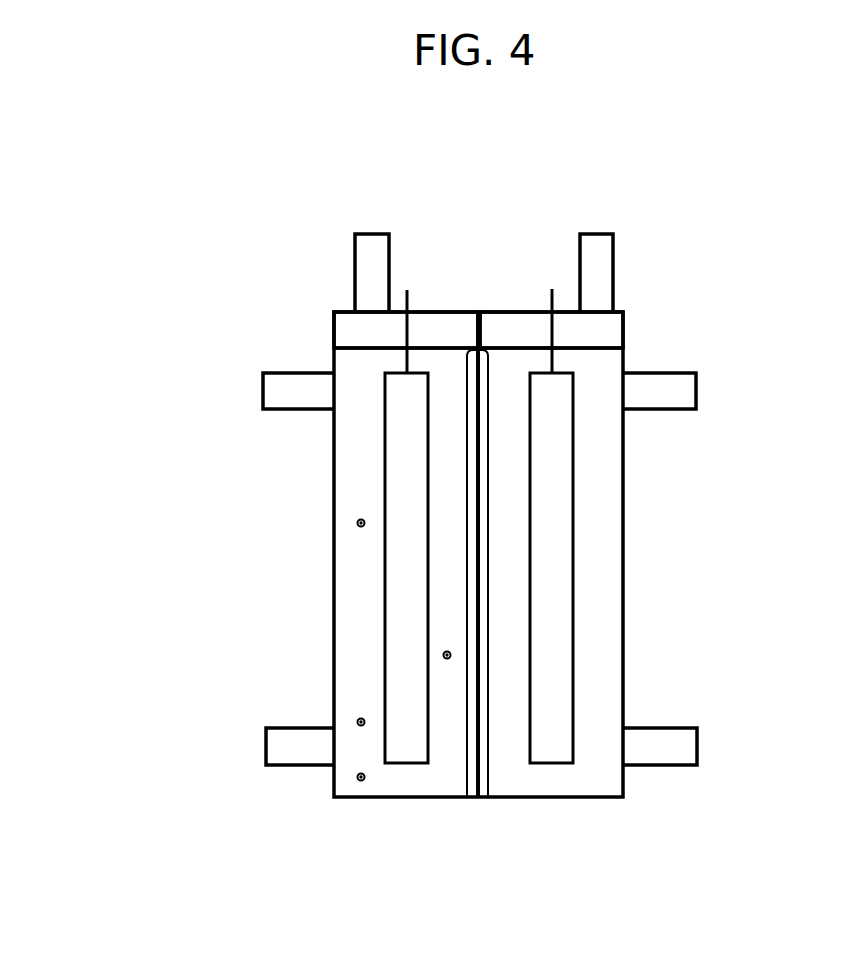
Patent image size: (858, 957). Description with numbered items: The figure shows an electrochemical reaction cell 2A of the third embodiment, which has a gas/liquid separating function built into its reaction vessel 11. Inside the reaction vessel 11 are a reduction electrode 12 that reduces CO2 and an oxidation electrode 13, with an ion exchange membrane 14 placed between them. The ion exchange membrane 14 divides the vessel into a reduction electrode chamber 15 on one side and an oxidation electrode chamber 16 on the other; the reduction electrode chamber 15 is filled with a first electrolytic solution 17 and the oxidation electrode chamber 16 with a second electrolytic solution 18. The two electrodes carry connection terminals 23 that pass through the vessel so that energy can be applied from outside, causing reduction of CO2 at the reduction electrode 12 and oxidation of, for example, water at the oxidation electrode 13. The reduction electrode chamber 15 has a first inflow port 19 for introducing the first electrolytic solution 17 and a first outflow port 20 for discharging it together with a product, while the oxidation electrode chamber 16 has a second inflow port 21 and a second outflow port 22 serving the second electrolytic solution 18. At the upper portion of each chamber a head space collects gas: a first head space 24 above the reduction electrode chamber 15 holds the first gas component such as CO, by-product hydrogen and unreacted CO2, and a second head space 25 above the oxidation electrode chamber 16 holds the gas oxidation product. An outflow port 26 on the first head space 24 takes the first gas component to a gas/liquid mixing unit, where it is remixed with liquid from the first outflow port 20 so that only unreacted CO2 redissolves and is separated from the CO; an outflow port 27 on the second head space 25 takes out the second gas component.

The electrochemical reaction cell 2A is at (317, 210).
The reaction vessel 11 is at (623, 475).
The reduction electrode 12 is at (395, 583).
The oxidation electrode 13 is at (562, 580).
The ion exchange membrane 14 is at (482, 312).
The reduction electrode chamber 15 is at (427, 799).
The oxidation electrode chamber 16 is at (575, 799).
The first electrolytic solution 17 is at (368, 640).
The second electrolytic solution 18 is at (595, 652).
The first inflow port 19 is at (290, 765).
The first outflow port 20 is at (297, 372).
The second inflow port 21 is at (677, 765).
The second outflow port 22 is at (663, 370).
The connection terminals 23 is at (547, 293).
The first head space 24 is at (357, 335).
The second head space 25 is at (602, 327).
The outflow port 26 is at (372, 234).
The outflow port 27 is at (597, 234).
The element CO2 is at (359, 781).